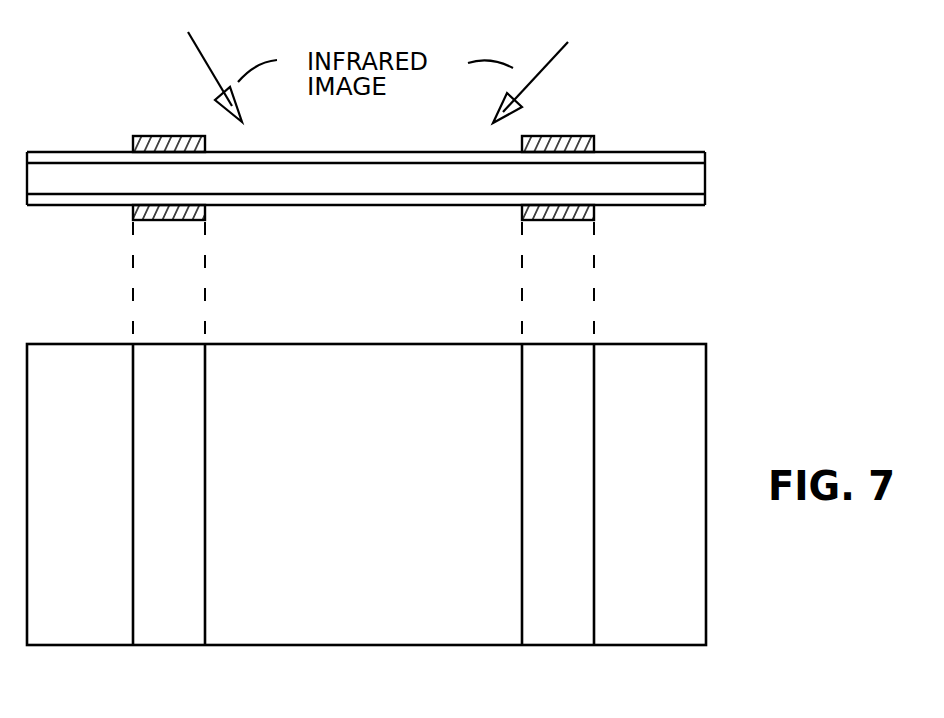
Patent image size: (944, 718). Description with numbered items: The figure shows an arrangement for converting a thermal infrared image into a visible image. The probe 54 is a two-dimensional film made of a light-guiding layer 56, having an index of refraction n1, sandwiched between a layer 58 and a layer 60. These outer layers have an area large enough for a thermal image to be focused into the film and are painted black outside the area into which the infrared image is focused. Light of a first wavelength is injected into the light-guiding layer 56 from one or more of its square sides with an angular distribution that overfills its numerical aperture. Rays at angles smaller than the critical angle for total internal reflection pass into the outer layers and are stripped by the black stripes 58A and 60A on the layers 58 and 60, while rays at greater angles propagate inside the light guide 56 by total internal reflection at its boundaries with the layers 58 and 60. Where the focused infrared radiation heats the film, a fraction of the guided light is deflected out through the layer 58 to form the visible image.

The probe 54 is at (376, 214).
The light-guiding layer 56 is at (693, 178).
The layer 58 is at (704, 158).
The layer 60 is at (683, 200).
The black stripes 58A is at (147, 128).
The black stripes 60A is at (193, 226).